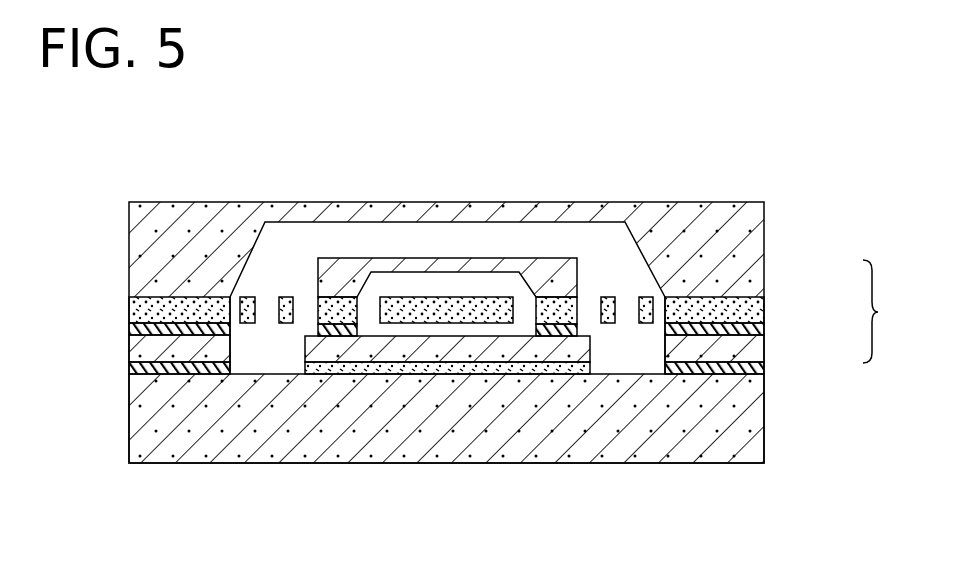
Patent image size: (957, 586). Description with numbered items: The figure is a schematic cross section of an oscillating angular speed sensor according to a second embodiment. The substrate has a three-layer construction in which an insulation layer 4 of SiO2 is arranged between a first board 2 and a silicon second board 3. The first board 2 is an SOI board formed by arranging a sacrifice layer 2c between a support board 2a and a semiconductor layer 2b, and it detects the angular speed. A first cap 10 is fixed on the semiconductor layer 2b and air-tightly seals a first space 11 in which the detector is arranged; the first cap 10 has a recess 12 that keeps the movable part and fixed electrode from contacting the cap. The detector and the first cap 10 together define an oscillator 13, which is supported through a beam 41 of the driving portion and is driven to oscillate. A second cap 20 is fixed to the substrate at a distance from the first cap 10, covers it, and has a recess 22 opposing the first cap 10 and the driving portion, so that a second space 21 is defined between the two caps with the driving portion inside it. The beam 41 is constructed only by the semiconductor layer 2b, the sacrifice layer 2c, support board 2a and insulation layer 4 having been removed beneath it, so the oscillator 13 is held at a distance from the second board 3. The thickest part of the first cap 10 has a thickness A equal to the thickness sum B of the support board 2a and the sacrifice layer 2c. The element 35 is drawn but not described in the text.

The first board 2 is at (878, 311).
The support board 2a is at (755, 352).
The semiconductor layer 2b is at (760, 313).
The sacrifice layer 2c is at (757, 330).
The second board 3 is at (753, 425).
The insulation layer 4 is at (757, 371).
The first cap 10 is at (550, 257).
The first space 11 is at (462, 288).
The recess 12 is at (335, 268).
The oscillator 13 is at (387, 362).
The second cap 20 is at (160, 233).
The second space 21 is at (612, 257).
The recess 22 is at (260, 256).
The support electrode 35 is at (470, 324).
The beam 41 is at (248, 324).
The thickness of the thickest part of the first cap A is at (335, 297).
The thickness sum of the support board and the sacrifice layer B is at (323, 325).